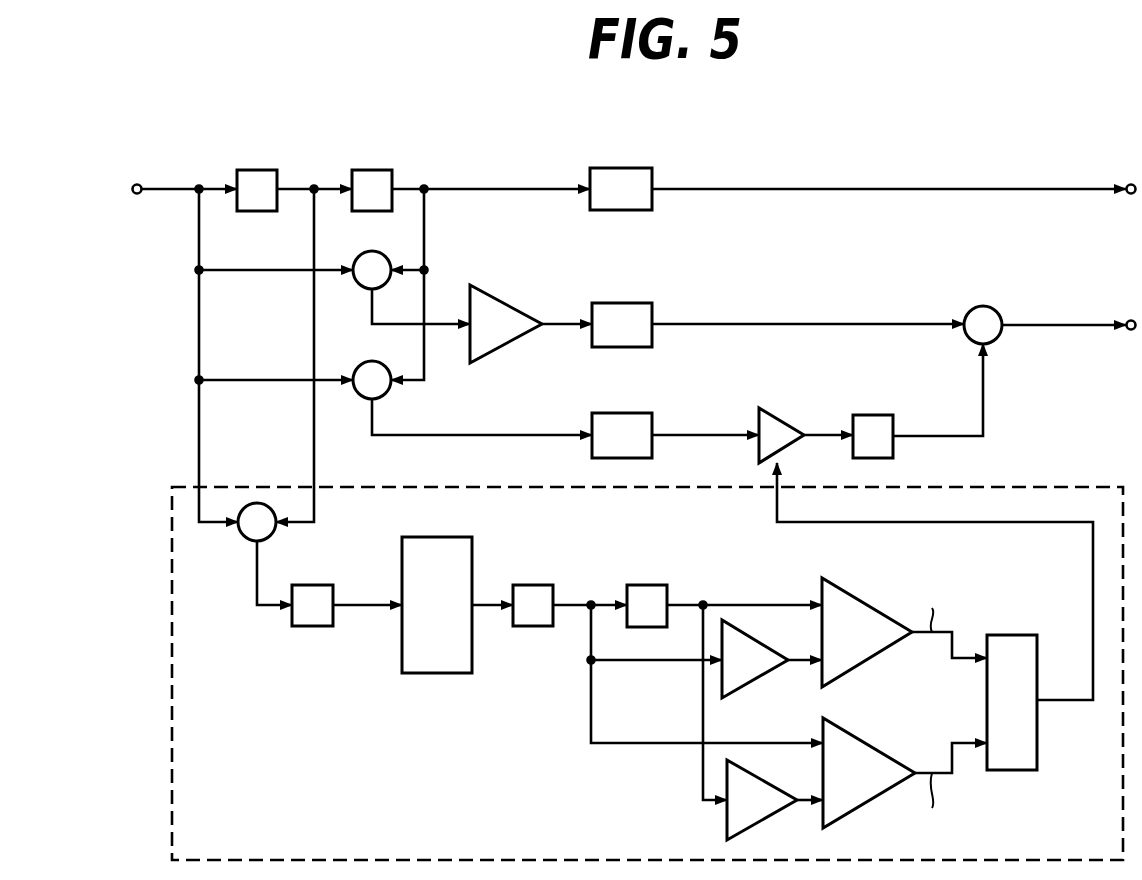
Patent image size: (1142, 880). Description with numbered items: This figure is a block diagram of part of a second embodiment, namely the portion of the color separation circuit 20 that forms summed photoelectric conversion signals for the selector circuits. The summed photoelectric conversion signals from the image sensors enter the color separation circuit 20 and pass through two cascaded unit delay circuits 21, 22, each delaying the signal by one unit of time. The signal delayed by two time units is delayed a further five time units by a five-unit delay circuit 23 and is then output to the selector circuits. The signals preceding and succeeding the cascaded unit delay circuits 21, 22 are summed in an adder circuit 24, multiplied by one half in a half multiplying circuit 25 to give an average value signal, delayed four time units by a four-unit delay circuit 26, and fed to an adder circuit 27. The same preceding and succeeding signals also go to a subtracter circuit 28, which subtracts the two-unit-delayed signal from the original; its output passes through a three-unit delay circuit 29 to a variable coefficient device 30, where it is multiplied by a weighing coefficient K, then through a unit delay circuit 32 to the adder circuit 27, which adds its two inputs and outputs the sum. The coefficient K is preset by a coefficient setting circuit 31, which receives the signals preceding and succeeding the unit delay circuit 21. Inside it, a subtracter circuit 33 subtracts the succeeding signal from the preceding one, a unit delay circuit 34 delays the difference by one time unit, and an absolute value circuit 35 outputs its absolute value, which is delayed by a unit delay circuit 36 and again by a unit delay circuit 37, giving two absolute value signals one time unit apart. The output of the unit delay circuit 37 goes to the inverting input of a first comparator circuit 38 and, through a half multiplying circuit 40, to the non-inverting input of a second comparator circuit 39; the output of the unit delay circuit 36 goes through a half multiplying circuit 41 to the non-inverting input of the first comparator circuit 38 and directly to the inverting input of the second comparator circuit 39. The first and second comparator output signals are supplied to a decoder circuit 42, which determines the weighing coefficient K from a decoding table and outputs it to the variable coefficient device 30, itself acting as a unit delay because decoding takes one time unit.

The color separation circuit 20 is at (838, 137).
The unit delay circuit 21 is at (268, 170).
The unit delay circuit 22 is at (383, 170).
The 5-unit delay circuit 23 is at (640, 168).
The adder circuit 24 is at (372, 251).
The ½ multiplying circuit 25 is at (519, 302).
The 4-unit delay circuit 26 is at (636, 303).
The adder circuit 27 is at (990, 306).
The subtracter circuit 28 is at (361, 364).
The 3-unit delay circuit 29 is at (640, 413).
The variable coefficient device 30 is at (790, 410).
The coefficient setting circuit 31 is at (1052, 487).
The unit delay circuit 32 is at (888, 415).
The subtracter circuit 33 is at (245, 536).
The unit delay circuit 34 is at (326, 585).
The absolute value circuit 35 is at (455, 673).
The unit delay circuit 36 is at (547, 585).
The unit delay circuit 37 is at (662, 585).
The first comparator circuit 38 is at (885, 609).
The second comparator circuit 39 is at (882, 746).
The ½ multiplying circuit 40 is at (760, 778).
The ½ multiplying circuit 41 is at (757, 687).
The decoder circuit 42 is at (1022, 635).